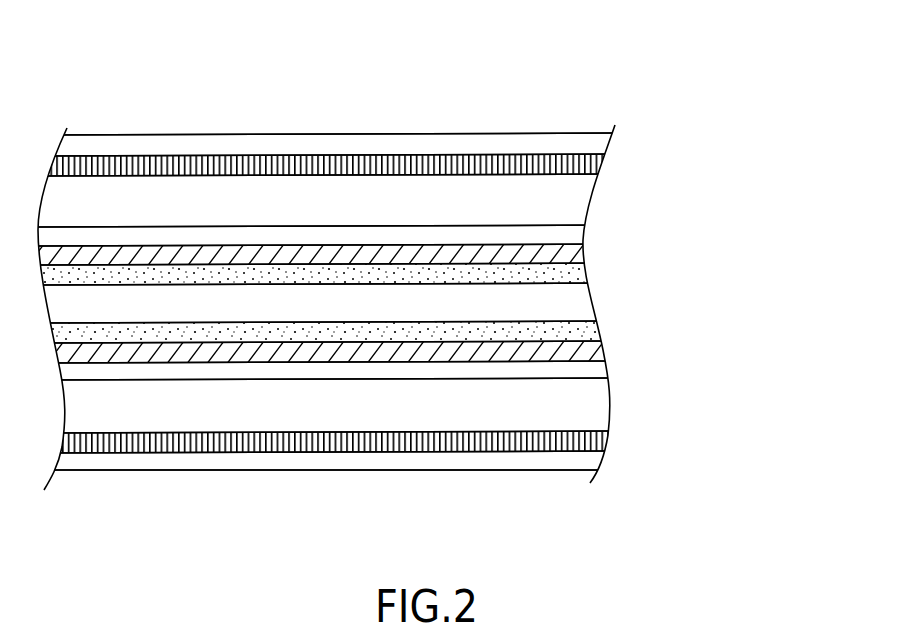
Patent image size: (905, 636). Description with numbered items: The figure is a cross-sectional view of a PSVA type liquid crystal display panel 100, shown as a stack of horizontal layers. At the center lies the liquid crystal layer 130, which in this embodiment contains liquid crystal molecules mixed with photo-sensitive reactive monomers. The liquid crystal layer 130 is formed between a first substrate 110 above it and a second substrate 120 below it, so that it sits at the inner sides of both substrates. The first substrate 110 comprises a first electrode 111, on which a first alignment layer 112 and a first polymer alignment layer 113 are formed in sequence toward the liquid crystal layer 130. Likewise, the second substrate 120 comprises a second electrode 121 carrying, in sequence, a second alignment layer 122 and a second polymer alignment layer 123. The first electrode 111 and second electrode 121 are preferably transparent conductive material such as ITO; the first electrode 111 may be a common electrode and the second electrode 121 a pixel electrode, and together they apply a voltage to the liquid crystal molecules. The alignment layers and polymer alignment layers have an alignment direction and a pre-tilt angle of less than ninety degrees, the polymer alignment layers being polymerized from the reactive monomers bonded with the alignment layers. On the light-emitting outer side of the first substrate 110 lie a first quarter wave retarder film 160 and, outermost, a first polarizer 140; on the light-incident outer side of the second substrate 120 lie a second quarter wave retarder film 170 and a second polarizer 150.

The liquid crystal display panel 100 is at (732, 142).
The first substrate 110 is at (593, 187).
The first electrode 111 is at (573, 237).
The first alignment layer 112 is at (577, 250).
The first polymer alignment layer 113 is at (585, 268).
The second substrate 120 is at (598, 408).
The second electrode 121 is at (600, 372).
The second alignment layer 122 is at (603, 350).
The second polymer alignment layer 123 is at (603, 328).
The liquid crystal layer 130 is at (590, 300).
The first polarizer 140 is at (552, 143).
The second polarizer 150 is at (580, 458).
The first quarter wave retarder film 160 is at (578, 192).
The second quarter wave retarder film 170 is at (607, 445).